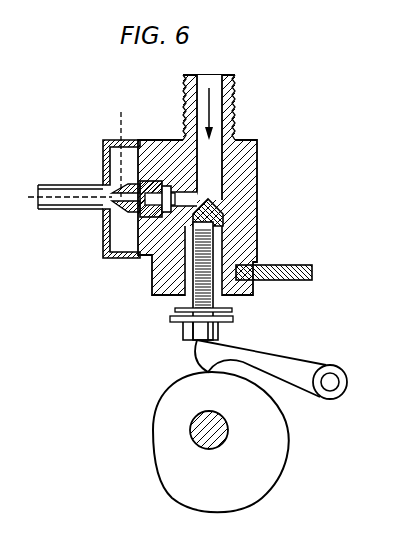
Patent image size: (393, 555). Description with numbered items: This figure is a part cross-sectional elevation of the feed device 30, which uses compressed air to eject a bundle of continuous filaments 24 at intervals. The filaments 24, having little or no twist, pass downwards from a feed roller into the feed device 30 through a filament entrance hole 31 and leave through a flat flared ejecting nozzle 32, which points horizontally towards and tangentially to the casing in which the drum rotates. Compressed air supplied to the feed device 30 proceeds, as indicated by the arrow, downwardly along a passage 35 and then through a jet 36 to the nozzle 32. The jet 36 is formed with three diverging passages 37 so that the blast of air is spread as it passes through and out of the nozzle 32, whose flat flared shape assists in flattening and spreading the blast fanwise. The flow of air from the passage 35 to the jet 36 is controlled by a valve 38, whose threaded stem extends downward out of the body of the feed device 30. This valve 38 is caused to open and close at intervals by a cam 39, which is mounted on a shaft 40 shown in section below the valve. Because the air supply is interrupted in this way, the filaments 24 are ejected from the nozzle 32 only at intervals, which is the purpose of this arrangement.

The bundle of continuous filaments 24 is at (121, 112).
The feed device 30 is at (197, 185).
The filament entrance hole 31 is at (115, 141).
The flat flared ejecting nozzle 32 is at (55, 184).
The passage 35 is at (228, 142).
The jet 36 is at (125, 215).
The diverging passages 37 is at (108, 208).
The valve 38 is at (218, 208).
The cam 39 is at (276, 443).
The shaft 40 is at (208, 450).